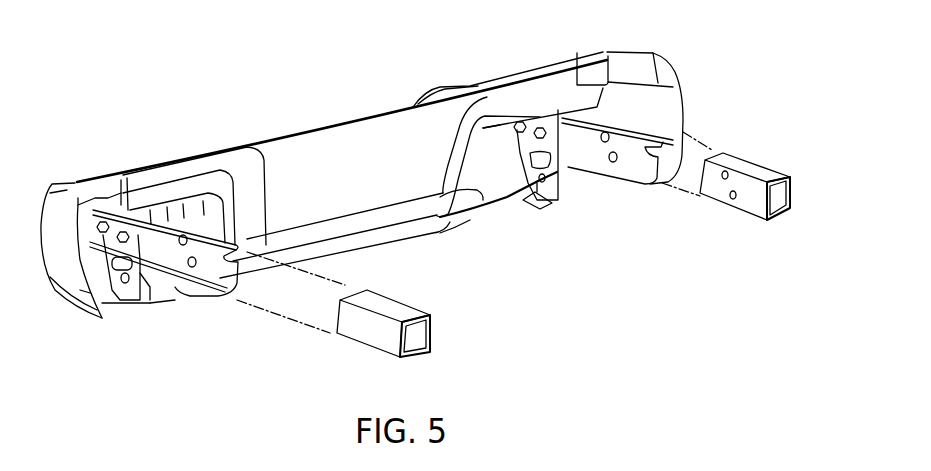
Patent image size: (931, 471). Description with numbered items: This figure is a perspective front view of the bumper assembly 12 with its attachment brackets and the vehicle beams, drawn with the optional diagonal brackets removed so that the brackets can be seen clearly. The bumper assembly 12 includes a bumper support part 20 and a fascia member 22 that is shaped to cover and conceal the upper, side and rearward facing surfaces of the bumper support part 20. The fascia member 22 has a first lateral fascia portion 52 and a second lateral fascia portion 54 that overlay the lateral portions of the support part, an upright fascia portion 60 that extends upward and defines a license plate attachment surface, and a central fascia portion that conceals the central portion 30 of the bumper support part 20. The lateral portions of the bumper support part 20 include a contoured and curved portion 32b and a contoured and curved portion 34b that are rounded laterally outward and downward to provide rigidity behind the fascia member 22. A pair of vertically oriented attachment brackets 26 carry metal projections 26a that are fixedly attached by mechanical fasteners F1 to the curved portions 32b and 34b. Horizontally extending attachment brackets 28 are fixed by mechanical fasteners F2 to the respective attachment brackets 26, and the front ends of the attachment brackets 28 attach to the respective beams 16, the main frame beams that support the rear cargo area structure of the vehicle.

The bumper assembly 12 is at (185, 68).
The fascia member 22 is at (504, 78).
The first lateral fascia portion 52 is at (462, 87).
The upright fascia portion 60 is at (333, 157).
The central portion 30 is at (377, 238).
The second lateral fascia portion 54 is at (102, 187).
The bumper support part 20 is at (497, 128).
The attachment bracket 28 is at (208, 263).
The attachment bracket 26 is at (132, 290).
The mechanical fastener F2 is at (97, 250).
The mechanical fastener F1 is at (157, 290).
The contoured and curved portion 34b is at (177, 287).
The contoured and curved portion 32b is at (480, 207).
The metal projection 26a is at (513, 197).
The beam 16 is at (370, 347).